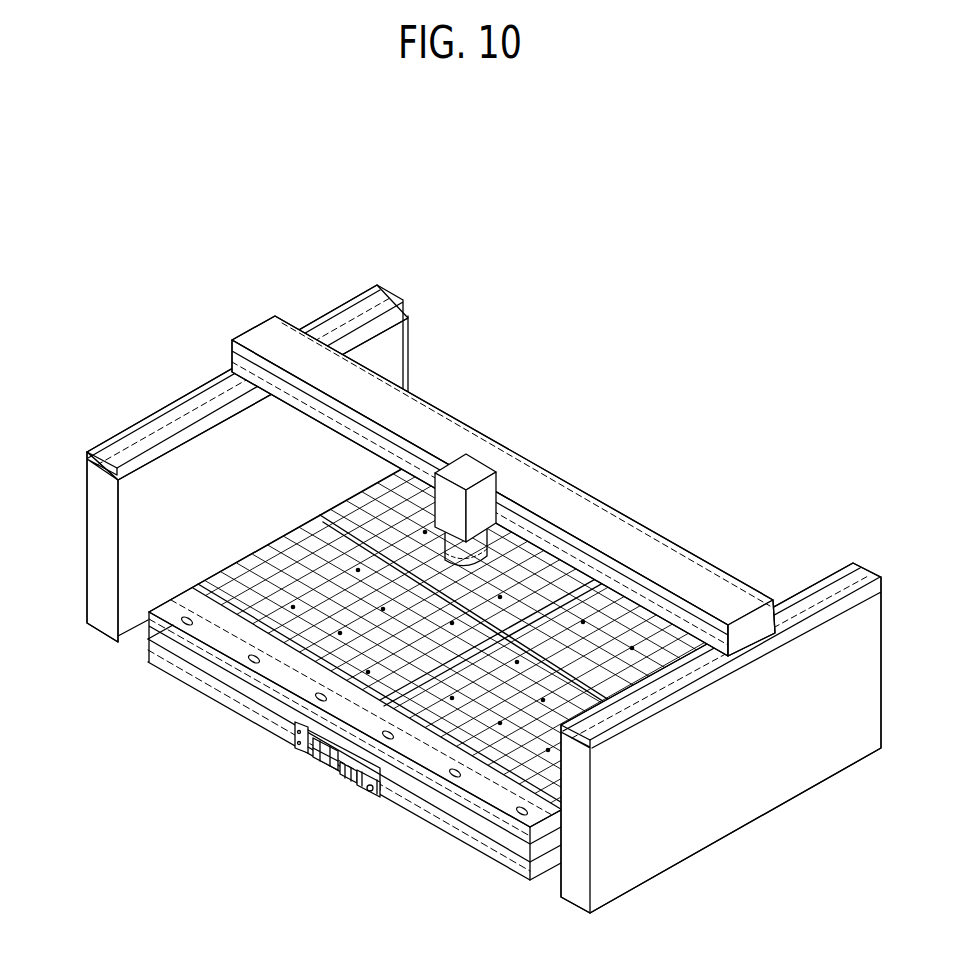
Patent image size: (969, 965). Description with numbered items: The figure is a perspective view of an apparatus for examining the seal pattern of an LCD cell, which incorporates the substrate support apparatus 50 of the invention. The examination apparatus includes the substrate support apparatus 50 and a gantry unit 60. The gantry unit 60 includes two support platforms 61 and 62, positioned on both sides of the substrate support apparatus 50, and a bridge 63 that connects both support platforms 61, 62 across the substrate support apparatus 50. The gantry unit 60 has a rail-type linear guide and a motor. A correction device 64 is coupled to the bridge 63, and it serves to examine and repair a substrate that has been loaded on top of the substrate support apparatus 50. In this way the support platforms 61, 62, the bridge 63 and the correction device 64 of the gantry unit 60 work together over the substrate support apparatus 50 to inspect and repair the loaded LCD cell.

The substrate support apparatus 50 is at (306, 809).
The gantry unit 60 is at (465, 613).
The support platform 61 is at (617, 873).
The support platform 62 is at (102, 611).
The bridge 63 is at (548, 487).
The correction device 64 is at (472, 466).